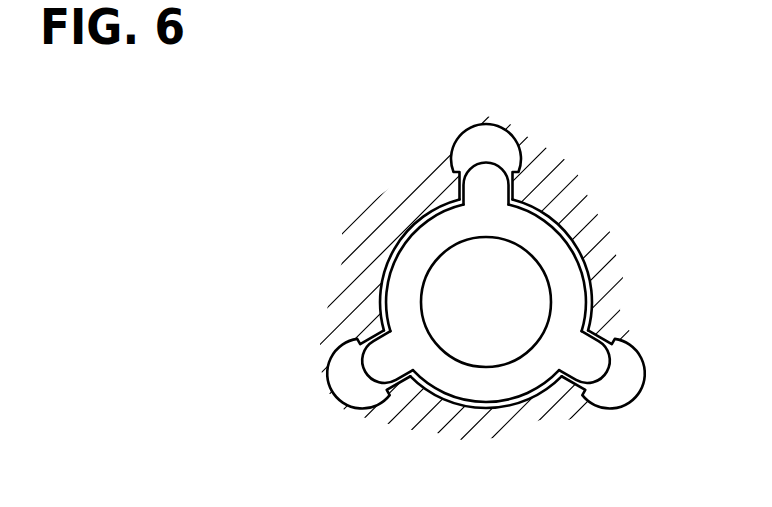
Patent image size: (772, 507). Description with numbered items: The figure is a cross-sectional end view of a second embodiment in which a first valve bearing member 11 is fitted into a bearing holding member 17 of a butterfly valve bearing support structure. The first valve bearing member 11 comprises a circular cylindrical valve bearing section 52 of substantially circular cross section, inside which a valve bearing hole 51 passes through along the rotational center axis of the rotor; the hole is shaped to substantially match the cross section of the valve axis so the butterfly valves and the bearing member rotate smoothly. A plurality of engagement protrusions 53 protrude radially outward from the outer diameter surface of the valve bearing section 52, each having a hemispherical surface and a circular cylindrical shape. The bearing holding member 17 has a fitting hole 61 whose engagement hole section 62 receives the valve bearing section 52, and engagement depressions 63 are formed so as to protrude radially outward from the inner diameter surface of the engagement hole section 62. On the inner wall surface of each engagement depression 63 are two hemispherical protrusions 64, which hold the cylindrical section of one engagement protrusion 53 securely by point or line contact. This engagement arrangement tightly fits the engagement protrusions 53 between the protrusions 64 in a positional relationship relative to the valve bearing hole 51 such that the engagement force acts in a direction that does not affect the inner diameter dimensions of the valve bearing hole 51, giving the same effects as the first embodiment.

The first valve bearing member 11 is at (563, 222).
The bearing holding member 17 is at (558, 180).
The valve bearing hole 51 is at (500, 317).
The valve bearing section 52 is at (578, 259).
The engagement protrusions 53 is at (469, 172).
The fitting hole 61 is at (500, 432).
The engagement hole section 62 is at (502, 402).
The engagement depressions 63 is at (481, 150).
The hemispherical protrusions 64 is at (454, 184).